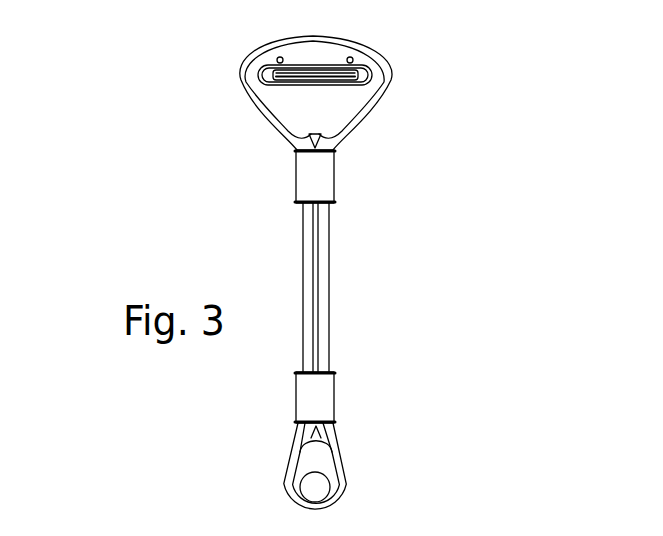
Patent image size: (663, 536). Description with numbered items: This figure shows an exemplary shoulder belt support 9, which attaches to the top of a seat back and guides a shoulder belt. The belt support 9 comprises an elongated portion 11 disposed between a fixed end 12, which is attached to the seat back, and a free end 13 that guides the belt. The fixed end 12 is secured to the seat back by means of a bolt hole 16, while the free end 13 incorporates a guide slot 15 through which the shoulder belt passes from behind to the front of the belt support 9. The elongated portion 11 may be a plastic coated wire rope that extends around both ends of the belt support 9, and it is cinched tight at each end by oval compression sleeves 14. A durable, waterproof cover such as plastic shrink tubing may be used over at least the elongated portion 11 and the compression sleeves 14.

The belt support 9 is at (400, 43).
The elongated portion 11 is at (325, 240).
The fixed end 12 is at (327, 460).
The free end 13 is at (287, 99).
The oval compression sleeve 14 is at (308, 182).
The guide slot 15 is at (367, 77).
The bolt hole 16 is at (325, 492).